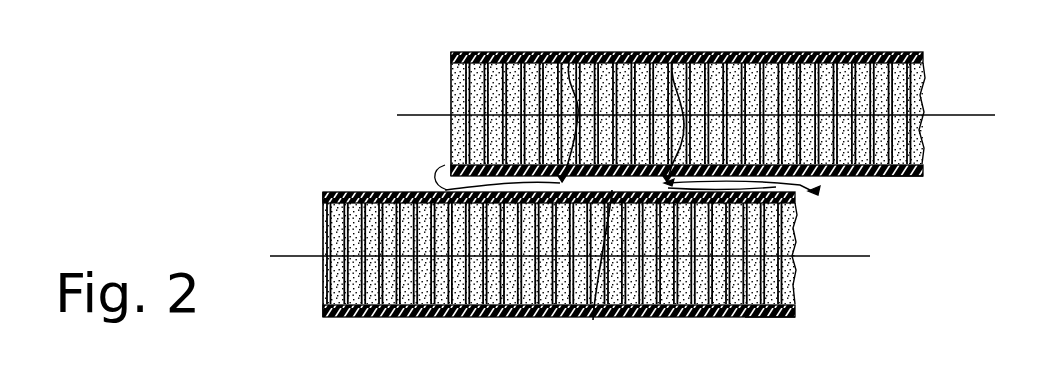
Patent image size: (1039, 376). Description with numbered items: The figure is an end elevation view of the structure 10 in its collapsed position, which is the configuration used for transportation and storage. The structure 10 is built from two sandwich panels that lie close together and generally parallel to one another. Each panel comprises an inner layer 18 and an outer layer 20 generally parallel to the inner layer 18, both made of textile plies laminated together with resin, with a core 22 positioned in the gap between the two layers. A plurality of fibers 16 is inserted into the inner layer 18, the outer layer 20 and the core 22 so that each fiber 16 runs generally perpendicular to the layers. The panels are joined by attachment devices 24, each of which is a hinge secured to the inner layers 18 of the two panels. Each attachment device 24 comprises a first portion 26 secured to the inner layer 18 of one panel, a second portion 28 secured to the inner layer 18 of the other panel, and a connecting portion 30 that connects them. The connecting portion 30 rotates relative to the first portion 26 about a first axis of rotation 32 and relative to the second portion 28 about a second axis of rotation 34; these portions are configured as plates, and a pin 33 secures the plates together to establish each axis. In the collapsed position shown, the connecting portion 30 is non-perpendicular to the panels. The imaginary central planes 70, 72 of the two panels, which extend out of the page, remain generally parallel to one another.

The structure 10 is at (311, 103).
The fibers 16 is at (906, 79).
The inner layer 18 is at (323, 200).
The outer layer 20 is at (738, 52).
The core 22 is at (903, 179).
The attachment device 24 is at (812, 192).
The first portion 26 is at (792, 193).
The second portion 28 is at (450, 181).
The connecting portion 30 is at (592, 320).
The first axis of rotation 32 is at (812, 192).
The pin 33 is at (572, 52).
The second axis of rotation 34 is at (445, 190).
The imaginary central plane 70 is at (980, 115).
The imaginary central plane 72 is at (858, 258).